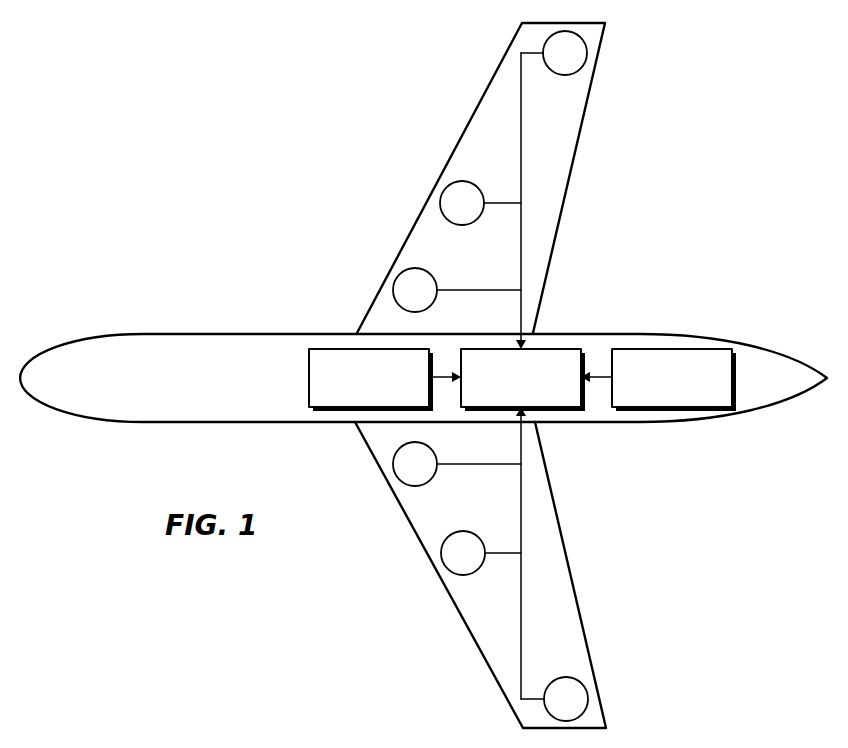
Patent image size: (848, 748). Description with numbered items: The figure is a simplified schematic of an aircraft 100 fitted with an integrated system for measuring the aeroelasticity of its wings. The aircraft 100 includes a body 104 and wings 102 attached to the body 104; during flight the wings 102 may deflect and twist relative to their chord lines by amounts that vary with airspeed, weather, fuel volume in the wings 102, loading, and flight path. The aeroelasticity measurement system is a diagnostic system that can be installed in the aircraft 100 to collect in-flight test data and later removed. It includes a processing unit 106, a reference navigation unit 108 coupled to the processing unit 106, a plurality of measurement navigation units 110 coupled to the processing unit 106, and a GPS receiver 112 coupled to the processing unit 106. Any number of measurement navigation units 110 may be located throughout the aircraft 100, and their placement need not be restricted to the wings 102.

The aircraft 100 is at (238, 176).
The wings 102 is at (494, 75).
The body 104 is at (122, 334).
The processing unit 106 is at (560, 349).
The reference navigation unit 108 is at (330, 349).
The measurement navigation units 110 is at (587, 58).
The GPS receiver 112 is at (712, 349).